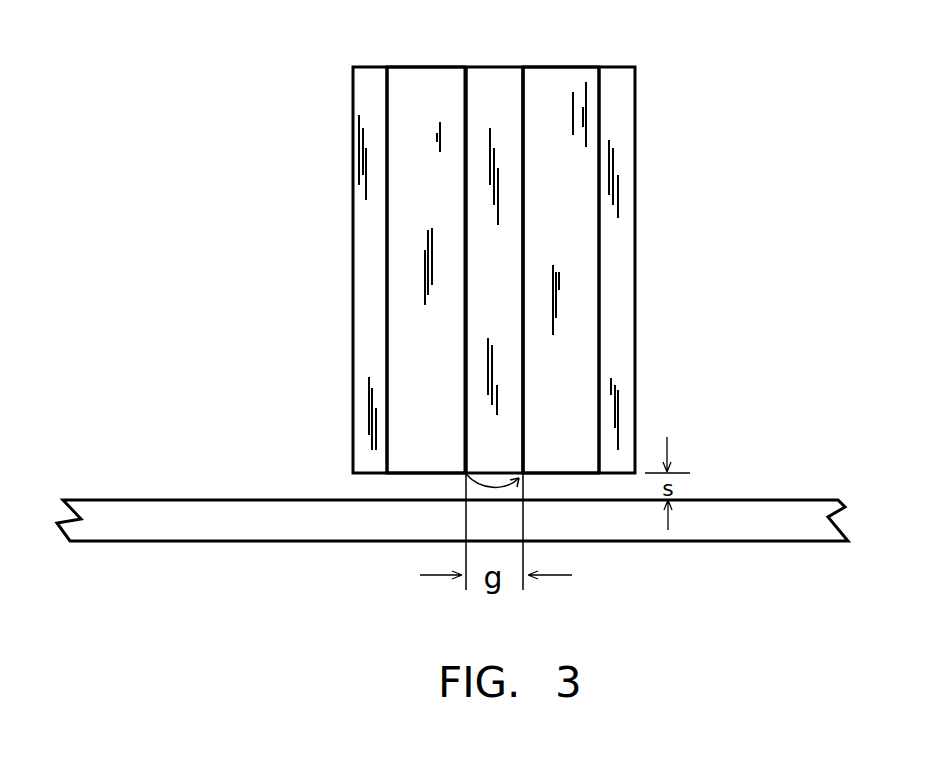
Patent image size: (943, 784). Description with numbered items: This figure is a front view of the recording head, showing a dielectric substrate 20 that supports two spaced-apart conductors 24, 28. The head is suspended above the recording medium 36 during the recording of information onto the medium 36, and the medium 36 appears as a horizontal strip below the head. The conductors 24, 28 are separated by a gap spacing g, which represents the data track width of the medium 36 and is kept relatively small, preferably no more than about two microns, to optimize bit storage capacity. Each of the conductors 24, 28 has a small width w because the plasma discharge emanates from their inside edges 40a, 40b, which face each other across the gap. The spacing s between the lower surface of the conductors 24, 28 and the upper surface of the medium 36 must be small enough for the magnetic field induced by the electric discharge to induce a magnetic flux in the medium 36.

The dielectric substrate 20 is at (637, 158).
The conductor 24 is at (428, 68).
The conductor 28 is at (557, 68).
The recording medium 36 is at (786, 541).
The inside edge 40a is at (466, 473).
The inside edge 40b is at (523, 473).